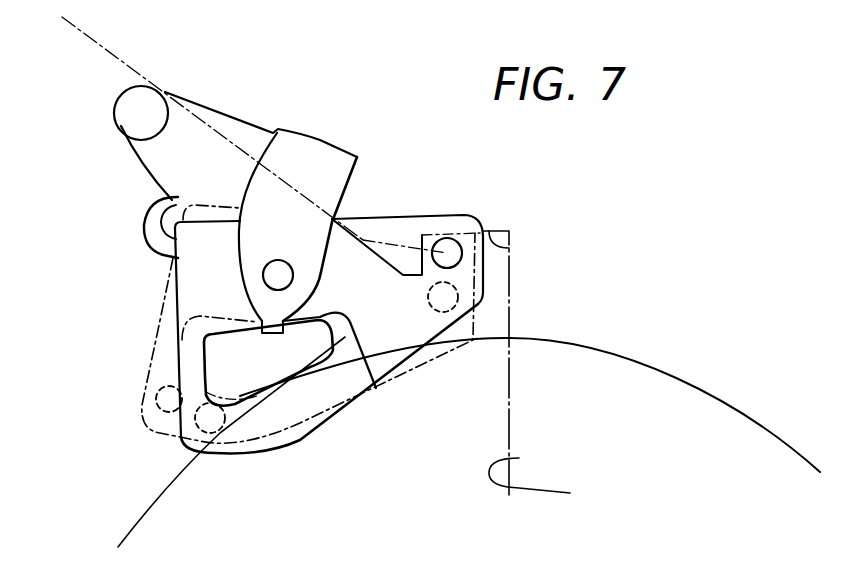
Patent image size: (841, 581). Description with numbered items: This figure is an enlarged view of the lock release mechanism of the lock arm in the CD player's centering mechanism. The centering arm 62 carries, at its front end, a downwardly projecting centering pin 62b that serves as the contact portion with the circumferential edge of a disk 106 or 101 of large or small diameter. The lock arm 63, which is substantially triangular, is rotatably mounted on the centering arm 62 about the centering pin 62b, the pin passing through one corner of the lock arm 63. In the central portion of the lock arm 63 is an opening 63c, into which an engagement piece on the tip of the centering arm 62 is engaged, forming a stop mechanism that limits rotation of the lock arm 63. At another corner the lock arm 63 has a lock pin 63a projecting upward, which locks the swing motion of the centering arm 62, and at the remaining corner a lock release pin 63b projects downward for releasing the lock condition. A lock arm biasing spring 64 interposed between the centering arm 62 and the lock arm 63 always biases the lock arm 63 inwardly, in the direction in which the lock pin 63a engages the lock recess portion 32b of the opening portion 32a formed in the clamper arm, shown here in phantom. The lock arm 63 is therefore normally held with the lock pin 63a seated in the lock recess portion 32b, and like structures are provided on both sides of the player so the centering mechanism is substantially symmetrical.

The opening portion 32a is at (555, 492).
The lock recess portion 32b is at (510, 248).
The centering arm 62 is at (330, 160).
The centering pin 62b is at (294, 276).
The lock arm 63 is at (408, 227).
The lock pin 63a is at (447, 240).
The lock release pin 63b is at (212, 425).
The opening 63c is at (337, 352).
The lock arm biasing spring 64 is at (138, 103).
The disk 101 is at (673, 387).
The disk 106 is at (231, 442).